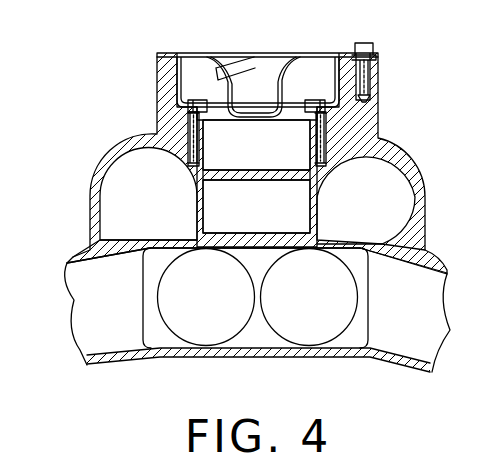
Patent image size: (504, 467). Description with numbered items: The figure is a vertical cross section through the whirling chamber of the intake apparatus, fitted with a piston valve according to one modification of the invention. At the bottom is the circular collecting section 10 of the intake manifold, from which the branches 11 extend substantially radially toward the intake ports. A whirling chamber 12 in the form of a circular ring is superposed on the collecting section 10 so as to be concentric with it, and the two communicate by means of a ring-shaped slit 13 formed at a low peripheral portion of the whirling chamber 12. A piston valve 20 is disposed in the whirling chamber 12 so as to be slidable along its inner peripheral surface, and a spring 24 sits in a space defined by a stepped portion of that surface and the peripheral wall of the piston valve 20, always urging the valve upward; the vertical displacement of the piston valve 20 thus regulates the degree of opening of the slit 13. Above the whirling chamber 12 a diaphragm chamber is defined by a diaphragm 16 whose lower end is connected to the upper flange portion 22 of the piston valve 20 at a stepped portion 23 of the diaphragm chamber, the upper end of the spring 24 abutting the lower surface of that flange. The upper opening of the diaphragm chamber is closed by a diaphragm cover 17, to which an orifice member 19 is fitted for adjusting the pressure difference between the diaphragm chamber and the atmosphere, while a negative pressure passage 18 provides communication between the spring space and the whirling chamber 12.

The collecting section 10 is at (254, 337).
The branches 11 is at (356, 366).
The whirling chamber 12 is at (117, 172).
The slit 13 is at (192, 243).
The diaphragm 16 is at (327, 77).
The diaphragm cover 17 is at (290, 80).
The negative pressure passage 18 is at (180, 143).
The orifice member 19 is at (233, 63).
The piston valve 20 is at (185, 207).
The upper flange portion 22 is at (200, 100).
The stepped portion 23 is at (180, 90).
The spring 24 is at (340, 118).